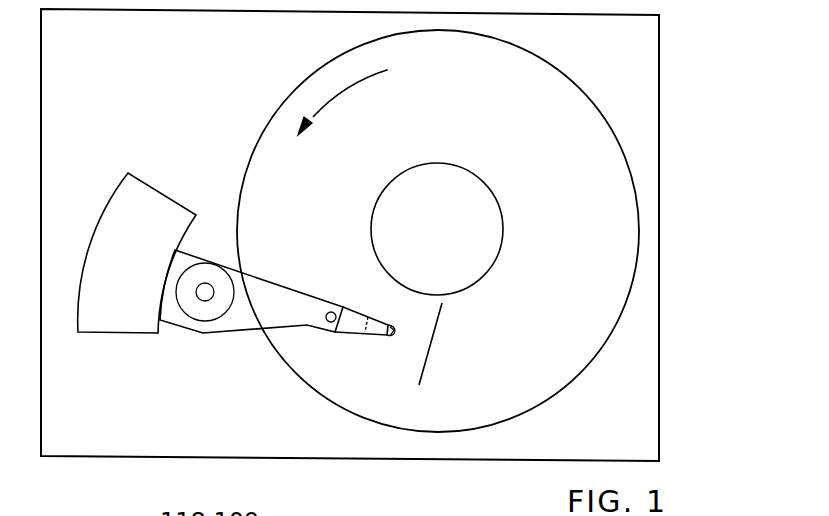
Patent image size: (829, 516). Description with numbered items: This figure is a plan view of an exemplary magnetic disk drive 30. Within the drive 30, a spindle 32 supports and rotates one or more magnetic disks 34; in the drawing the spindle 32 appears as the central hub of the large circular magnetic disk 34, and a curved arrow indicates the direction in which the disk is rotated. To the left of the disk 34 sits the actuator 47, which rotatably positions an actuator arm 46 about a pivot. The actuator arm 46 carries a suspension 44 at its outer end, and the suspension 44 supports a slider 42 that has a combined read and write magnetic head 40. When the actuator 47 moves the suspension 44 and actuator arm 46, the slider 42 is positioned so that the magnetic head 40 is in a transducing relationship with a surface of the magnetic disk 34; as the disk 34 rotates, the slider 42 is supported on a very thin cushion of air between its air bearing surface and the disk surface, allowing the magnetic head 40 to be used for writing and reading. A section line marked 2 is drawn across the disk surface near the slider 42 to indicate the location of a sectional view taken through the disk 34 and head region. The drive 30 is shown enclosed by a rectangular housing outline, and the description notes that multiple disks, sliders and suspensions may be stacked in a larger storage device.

The magnetic disk drive 30 is at (686, 45).
The spindle 32 is at (475, 175).
The magnetic disk 34 is at (582, 252).
The section line 2- 2 is at (450, 310).
The magnetic head 40 is at (392, 338).
The slider 42 is at (395, 331).
The suspension 44 is at (353, 336).
The actuator arm 46 is at (297, 292).
The actuator 47 is at (168, 203).